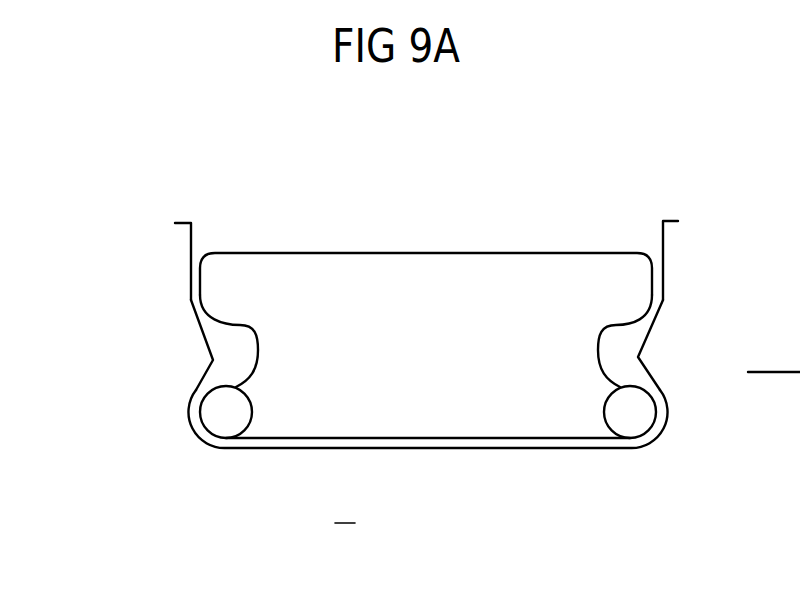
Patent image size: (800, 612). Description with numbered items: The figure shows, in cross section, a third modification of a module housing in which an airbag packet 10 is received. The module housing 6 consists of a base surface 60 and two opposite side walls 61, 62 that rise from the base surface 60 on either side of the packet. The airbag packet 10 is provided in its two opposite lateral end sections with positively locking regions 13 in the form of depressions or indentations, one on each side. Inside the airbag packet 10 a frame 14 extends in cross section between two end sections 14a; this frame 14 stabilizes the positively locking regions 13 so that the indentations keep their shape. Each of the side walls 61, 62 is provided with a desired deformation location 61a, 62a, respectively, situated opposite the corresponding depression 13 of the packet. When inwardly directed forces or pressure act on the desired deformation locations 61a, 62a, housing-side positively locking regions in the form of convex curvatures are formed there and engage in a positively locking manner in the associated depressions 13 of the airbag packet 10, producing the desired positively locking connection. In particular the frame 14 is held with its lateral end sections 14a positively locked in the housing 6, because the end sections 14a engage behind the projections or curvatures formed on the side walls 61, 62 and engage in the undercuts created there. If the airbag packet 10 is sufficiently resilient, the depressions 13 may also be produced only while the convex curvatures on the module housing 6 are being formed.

The module housing 6 is at (345, 508).
The airbag packet 10 is at (422, 252).
The positively locking regions 13 is at (259, 353).
The frame 14 is at (467, 440).
The end sections 14a is at (227, 422).
The base surface 60 is at (528, 447).
The side wall 61 is at (189, 280).
The desired deformation location 61a is at (213, 360).
The side wall 62 is at (663, 270).
The desired deformation location 62a is at (638, 357).